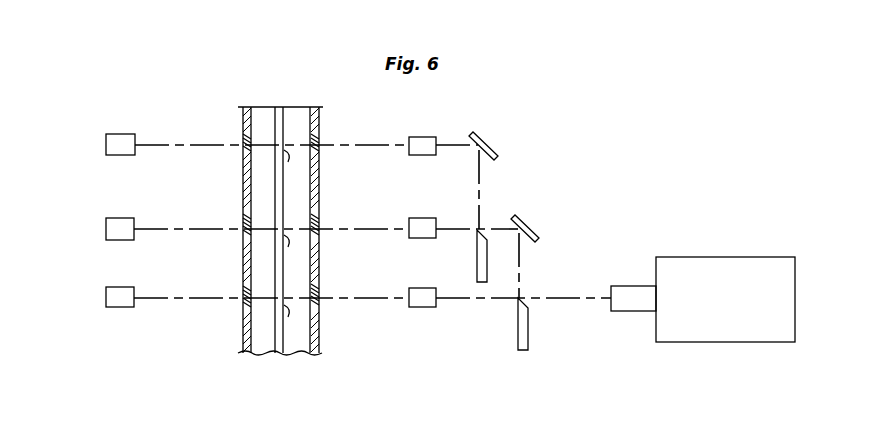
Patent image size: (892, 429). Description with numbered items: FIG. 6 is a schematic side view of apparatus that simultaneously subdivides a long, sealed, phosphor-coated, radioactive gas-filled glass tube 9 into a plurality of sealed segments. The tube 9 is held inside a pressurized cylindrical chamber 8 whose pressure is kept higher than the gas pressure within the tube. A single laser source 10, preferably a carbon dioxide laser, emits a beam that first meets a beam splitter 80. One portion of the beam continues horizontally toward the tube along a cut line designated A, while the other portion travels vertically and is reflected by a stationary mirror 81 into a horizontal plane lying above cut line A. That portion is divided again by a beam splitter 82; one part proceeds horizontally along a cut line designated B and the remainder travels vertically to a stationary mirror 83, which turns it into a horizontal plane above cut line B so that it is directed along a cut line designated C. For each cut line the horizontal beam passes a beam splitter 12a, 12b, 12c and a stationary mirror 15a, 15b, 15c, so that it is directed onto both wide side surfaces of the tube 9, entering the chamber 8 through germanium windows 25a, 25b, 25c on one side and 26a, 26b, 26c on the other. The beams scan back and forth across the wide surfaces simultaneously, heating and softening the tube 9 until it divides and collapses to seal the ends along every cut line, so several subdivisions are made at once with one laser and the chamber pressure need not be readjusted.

The pressurized cylindrical chamber 8 is at (322, 348).
The glass tube 9 is at (270, 118).
The laser source 10 is at (713, 238).
The beam splitter 12a is at (422, 307).
The beam splitter 12b is at (420, 238).
The beam splitter 12c is at (422, 155).
The stationary mirror 15a is at (106, 298).
The stationary mirror 15b is at (106, 229).
The stationary mirror 15c is at (106, 145).
The germanium window 25a is at (320, 284).
The germanium window 25b is at (320, 220).
The germanium window 25c is at (320, 138).
The germanium window 26a is at (242, 292).
The germanium window 26b is at (242, 220).
The germanium window 26c is at (242, 138).
The beam splitter 80 is at (528, 335).
The stationary mirror 81 is at (534, 229).
The beam splitter 82 is at (477, 272).
The stationary mirror 83 is at (494, 146).